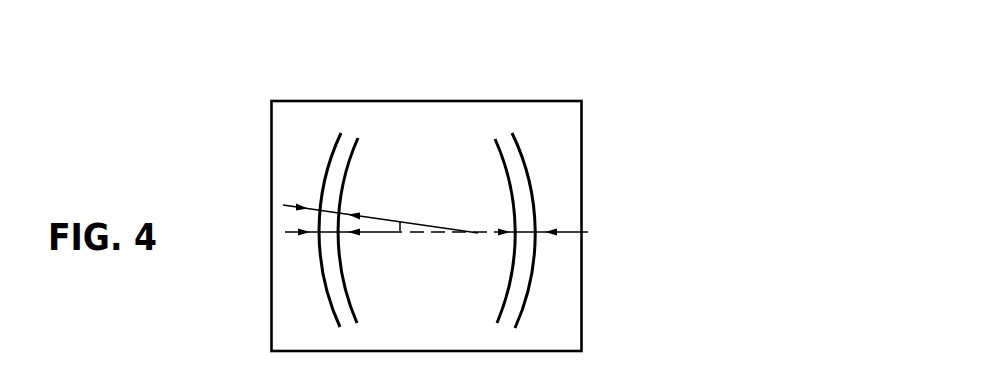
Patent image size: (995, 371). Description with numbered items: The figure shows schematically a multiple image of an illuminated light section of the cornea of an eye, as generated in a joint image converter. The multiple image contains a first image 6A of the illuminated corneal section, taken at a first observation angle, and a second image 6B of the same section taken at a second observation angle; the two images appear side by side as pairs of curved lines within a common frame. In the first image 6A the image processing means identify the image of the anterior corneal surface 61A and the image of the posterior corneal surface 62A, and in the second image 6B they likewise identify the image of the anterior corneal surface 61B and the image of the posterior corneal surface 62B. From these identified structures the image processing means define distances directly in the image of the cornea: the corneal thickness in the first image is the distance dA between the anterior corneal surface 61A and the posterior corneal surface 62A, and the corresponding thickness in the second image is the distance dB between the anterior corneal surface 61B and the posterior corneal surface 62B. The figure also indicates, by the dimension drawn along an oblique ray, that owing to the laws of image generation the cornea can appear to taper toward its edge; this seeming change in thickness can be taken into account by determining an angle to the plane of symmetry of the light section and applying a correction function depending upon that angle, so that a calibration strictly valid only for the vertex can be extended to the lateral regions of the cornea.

The first image 6A is at (310, 197).
The second image 6B is at (588, 199).
The image of the anterior corneal surface 61A is at (318, 178).
The image of the posterior corneal surface 62A is at (351, 162).
The image of the anterior corneal surface 61B is at (530, 178).
The image of the posterior corneal surface 62B is at (501, 160).
The distance dA is at (296, 241).
The thickness of first optical element along oblique ray dA' is at (364, 180).
The distance dB is at (523, 233).